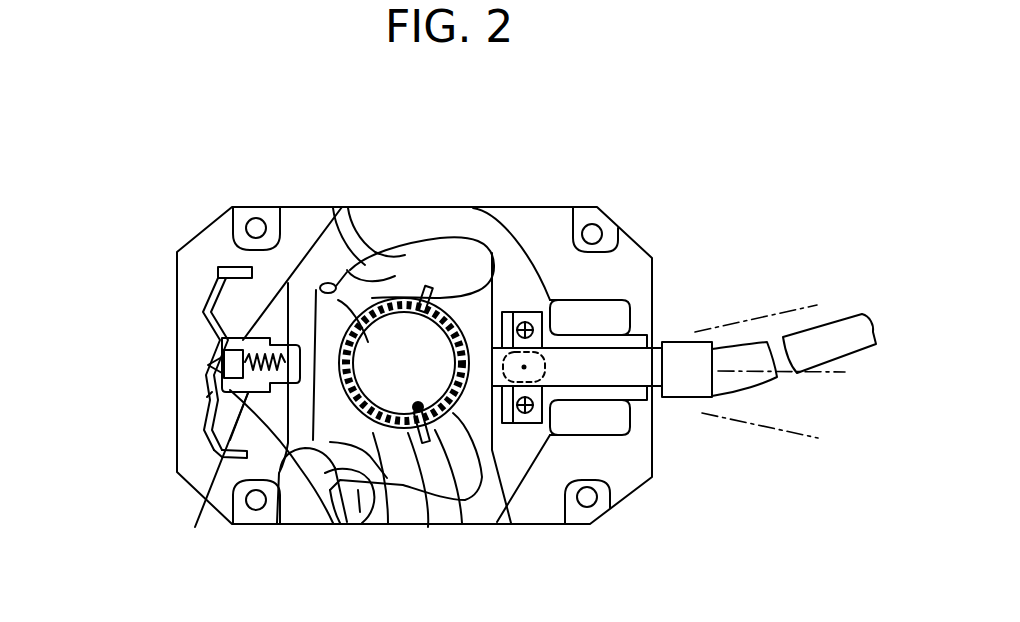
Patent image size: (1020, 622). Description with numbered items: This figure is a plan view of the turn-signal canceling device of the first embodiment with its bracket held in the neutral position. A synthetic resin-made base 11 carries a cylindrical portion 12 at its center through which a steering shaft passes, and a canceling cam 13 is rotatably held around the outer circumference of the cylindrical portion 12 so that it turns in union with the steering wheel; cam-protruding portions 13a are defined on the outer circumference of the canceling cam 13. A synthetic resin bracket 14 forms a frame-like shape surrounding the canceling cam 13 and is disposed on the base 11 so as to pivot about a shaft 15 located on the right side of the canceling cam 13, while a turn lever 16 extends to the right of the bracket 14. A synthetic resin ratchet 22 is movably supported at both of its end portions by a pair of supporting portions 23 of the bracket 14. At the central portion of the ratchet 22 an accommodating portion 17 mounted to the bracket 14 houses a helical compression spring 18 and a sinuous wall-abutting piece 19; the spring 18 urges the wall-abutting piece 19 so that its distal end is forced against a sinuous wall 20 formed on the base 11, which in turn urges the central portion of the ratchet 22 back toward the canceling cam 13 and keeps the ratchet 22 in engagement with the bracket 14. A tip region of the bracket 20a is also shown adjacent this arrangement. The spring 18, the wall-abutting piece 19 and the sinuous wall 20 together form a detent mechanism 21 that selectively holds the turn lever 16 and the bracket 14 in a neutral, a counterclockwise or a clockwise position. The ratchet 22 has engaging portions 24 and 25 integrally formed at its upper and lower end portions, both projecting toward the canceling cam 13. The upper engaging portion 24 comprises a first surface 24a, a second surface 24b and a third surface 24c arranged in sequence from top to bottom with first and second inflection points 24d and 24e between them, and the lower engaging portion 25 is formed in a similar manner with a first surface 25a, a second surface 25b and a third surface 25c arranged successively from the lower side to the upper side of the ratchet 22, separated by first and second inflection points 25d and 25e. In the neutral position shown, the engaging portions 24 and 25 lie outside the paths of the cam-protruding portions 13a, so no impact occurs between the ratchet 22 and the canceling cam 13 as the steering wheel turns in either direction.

The base 11 is at (555, 204).
The cylindrical portion 12 is at (433, 527).
The canceling cam 13 is at (490, 470).
The cam-protruding portions 13a is at (493, 251).
The bracket 14 is at (473, 208).
The shaft 15 is at (543, 378).
The turn lever 16 is at (680, 342).
The accommodating portion 17 is at (230, 440).
The helical compression spring 18 is at (237, 398).
The sinuous wall-abutting piece 19 is at (207, 397).
The sinuous wall 20 is at (213, 317).
The bracket tip 20a is at (210, 357).
The detent mechanism 21 is at (197, 393).
The ratchet 22 is at (283, 307).
The supporting portions 23 is at (360, 236).
The engaging portion 24 is at (347, 270).
The first surface 24a is at (380, 250).
The second surface 24b is at (380, 280).
The third surface 24c is at (338, 300).
The first inflection point 24d is at (333, 208).
The second inflection point 24e is at (404, 364).
The engaging portion 25 is at (312, 483).
The first surface 25a is at (384, 505).
The second surface 25b is at (336, 470).
The third surface 25c is at (293, 507).
The first inflection point 25d is at (388, 412).
The second inflection point 25e is at (410, 410).